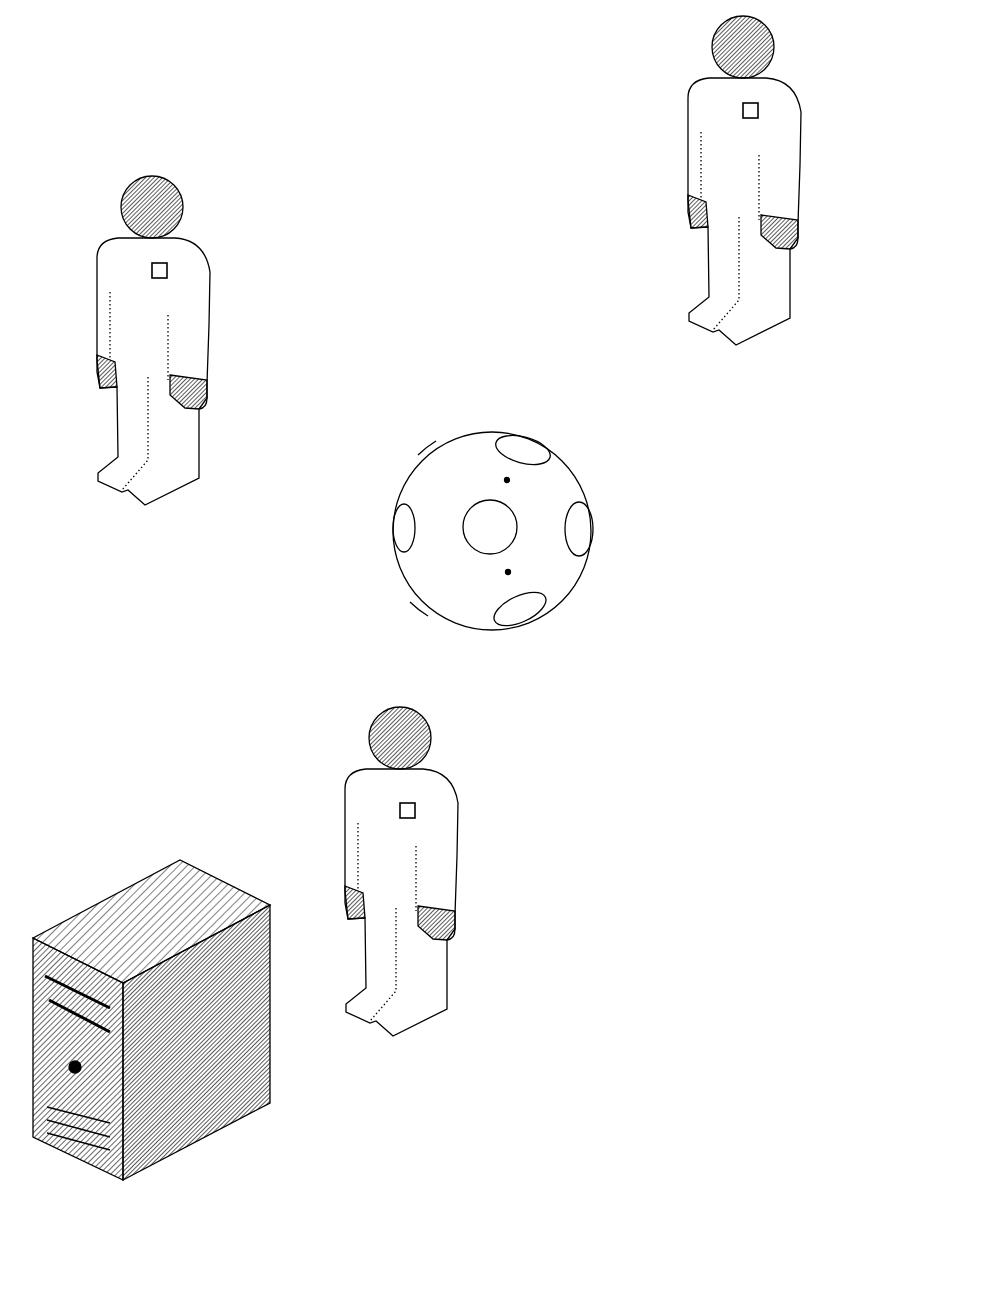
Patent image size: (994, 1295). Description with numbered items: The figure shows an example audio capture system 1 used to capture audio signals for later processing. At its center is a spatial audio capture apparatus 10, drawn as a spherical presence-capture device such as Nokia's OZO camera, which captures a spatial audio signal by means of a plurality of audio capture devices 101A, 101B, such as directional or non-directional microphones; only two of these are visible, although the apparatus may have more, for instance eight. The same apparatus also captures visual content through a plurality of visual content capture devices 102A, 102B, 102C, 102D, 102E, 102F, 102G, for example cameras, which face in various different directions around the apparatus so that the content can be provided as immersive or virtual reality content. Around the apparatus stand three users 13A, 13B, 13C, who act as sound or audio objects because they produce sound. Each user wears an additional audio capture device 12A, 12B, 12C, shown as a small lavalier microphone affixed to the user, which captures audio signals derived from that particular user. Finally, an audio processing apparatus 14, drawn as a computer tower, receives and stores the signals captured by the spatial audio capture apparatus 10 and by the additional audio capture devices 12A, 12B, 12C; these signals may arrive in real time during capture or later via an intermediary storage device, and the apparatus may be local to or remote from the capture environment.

The audio capture system 1 is at (215, 45).
The spatial audio capture apparatus 10 is at (497, 543).
The additional audio capture device 12A is at (167, 270).
The additional audio capture device 12B is at (758, 110).
The additional audio capture device 12C is at (415, 810).
The user 13A is at (97, 258).
The user 13B is at (688, 98).
The user 13C is at (457, 888).
The audio processing apparatus 14 is at (210, 1140).
The audio capture device 101A is at (510, 480).
The audio capture device 101B is at (508, 575).
The visual content capture device 102A is at (427, 447).
The visual content capture device 102B is at (523, 440).
The visual content capture device 102C is at (587, 527).
The visual content capture device 102D is at (483, 510).
The visual content capture device 102E is at (523, 610).
The visual content capture device 102F is at (397, 528).
The visual content capture device 102G is at (420, 610).